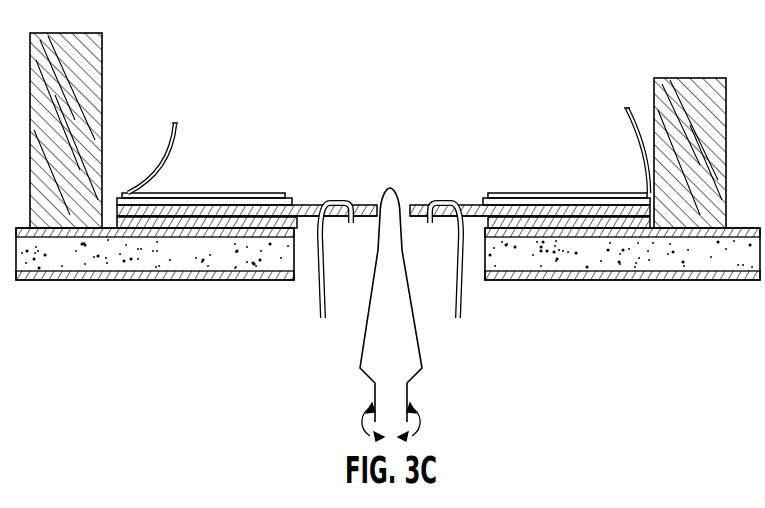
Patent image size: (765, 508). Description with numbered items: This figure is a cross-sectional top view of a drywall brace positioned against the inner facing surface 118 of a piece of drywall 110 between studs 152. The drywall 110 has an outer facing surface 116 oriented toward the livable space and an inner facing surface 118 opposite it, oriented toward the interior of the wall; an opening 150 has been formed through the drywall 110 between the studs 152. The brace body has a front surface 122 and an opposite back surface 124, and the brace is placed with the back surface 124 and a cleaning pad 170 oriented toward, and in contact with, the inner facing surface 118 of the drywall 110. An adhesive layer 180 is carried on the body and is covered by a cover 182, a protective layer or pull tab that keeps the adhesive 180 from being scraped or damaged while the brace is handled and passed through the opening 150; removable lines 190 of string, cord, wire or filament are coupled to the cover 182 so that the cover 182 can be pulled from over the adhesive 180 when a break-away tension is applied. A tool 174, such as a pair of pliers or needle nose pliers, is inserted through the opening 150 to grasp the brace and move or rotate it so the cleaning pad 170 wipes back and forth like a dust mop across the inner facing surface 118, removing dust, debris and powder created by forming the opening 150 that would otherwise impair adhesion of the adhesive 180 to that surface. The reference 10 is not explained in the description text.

The electronic device 10 is at (478, 202).
The drywall 110 is at (208, 262).
The outer facing surface 116 is at (128, 284).
The inner facing surface 118 is at (110, 193).
The front surface 122 is at (303, 205).
The back surface 124 is at (306, 216).
The opening 150 is at (475, 283).
The studs 152 is at (90, 50).
The cleaning pad 170 is at (277, 227).
The tool 174 is at (397, 344).
The adhesive layer 180 is at (181, 200).
The cover 182 is at (243, 193).
The removable lines 190 is at (176, 122).